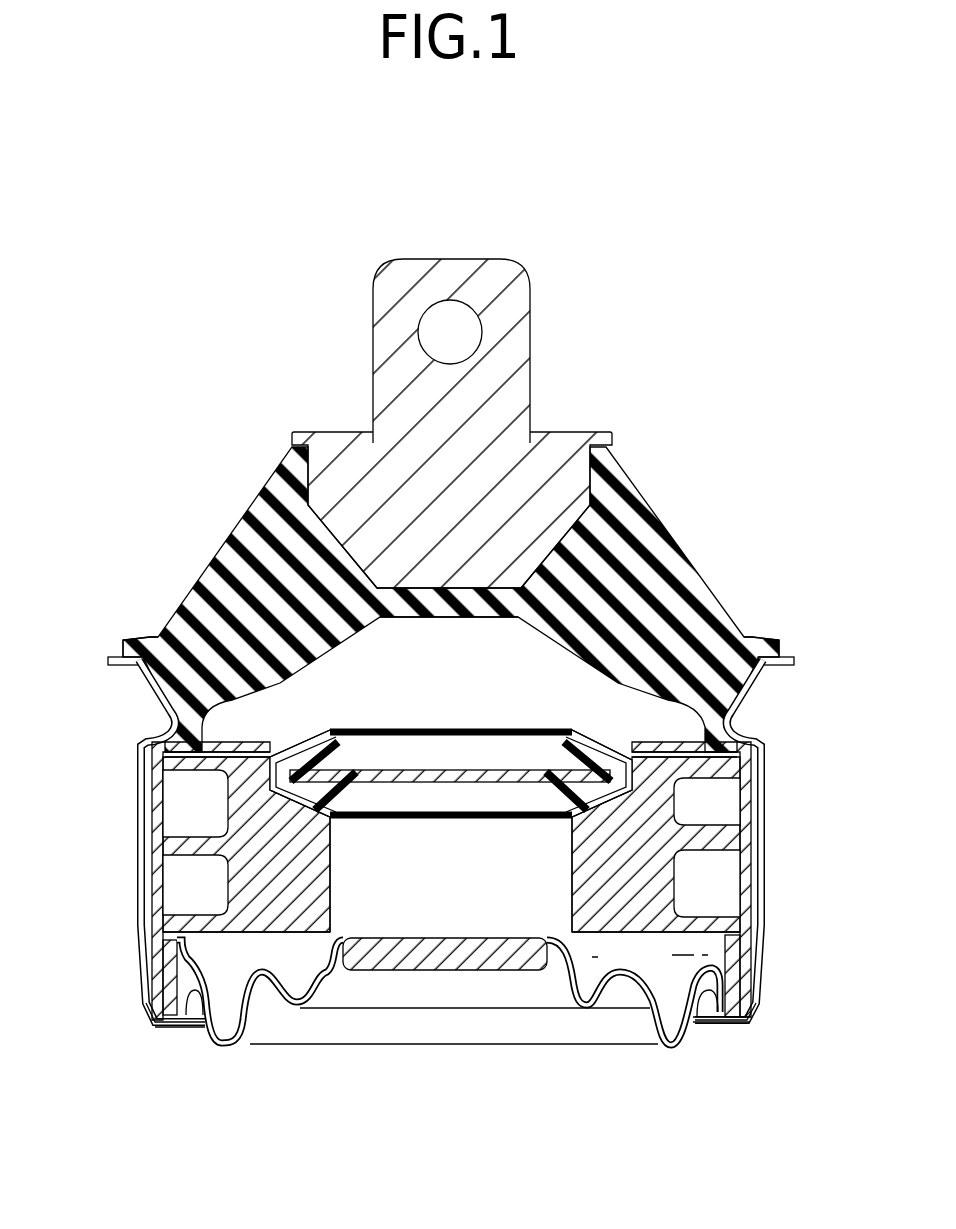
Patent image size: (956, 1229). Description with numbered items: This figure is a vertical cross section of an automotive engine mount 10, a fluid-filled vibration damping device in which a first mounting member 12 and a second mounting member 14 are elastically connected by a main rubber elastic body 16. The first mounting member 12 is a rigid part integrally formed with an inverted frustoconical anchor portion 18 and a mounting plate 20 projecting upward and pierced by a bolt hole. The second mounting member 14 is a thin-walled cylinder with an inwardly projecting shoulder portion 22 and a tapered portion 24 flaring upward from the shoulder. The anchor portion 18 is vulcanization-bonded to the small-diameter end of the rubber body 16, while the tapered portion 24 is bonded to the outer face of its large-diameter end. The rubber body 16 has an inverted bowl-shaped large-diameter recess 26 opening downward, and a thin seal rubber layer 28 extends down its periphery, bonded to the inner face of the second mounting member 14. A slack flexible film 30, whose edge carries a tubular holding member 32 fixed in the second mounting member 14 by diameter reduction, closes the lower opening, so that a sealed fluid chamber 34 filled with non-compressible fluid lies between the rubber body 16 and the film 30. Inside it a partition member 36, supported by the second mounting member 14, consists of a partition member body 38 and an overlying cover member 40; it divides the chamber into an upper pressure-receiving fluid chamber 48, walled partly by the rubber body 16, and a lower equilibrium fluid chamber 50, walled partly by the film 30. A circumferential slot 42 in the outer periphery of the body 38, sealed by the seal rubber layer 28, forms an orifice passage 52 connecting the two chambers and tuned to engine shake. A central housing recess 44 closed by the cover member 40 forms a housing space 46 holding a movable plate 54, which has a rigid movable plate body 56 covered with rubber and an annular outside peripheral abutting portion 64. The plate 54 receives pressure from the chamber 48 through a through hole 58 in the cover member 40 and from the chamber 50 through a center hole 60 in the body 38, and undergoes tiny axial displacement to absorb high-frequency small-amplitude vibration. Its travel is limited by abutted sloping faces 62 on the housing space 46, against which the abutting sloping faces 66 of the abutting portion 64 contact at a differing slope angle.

The engine mount 10 is at (634, 404).
The first mounting member 12 is at (425, 423).
The second mounting member 14 is at (122, 763).
The main rubber elastic body 16 is at (630, 562).
The anchor portion 18 is at (330, 478).
The mounting plate 20 is at (388, 340).
The shoulder portion 22 is at (438, 839).
The tapered portion 24 is at (153, 680).
The large-diameter recess 26 is at (482, 616).
The seal rubber layer 28 is at (748, 878).
The flexible film 30 is at (655, 1005).
The holding member 32 is at (170, 967).
The fluid chamber 34 is at (578, 662).
The partition member 36 is at (166, 637).
The partition member body 38 is at (454, 925).
The cover member 40 is at (205, 755).
The slot 42 is at (183, 905).
The housing recess 44 is at (625, 773).
The housing space 46 is at (471, 826).
The pressure-receiving fluid chamber 48 is at (463, 702).
The equilibrium fluid chamber 50 is at (658, 964).
The orifice passage 52 is at (190, 890).
The movable plate 54 is at (588, 727).
The movable plate body 56 is at (417, 784).
The through hole 58 is at (313, 732).
The center hole 60 is at (550, 922).
The abutted sloping faces 62 is at (240, 735).
The outside peripheral abutting portion 64 is at (585, 758).
The abutting sloping faces 66 is at (625, 775).